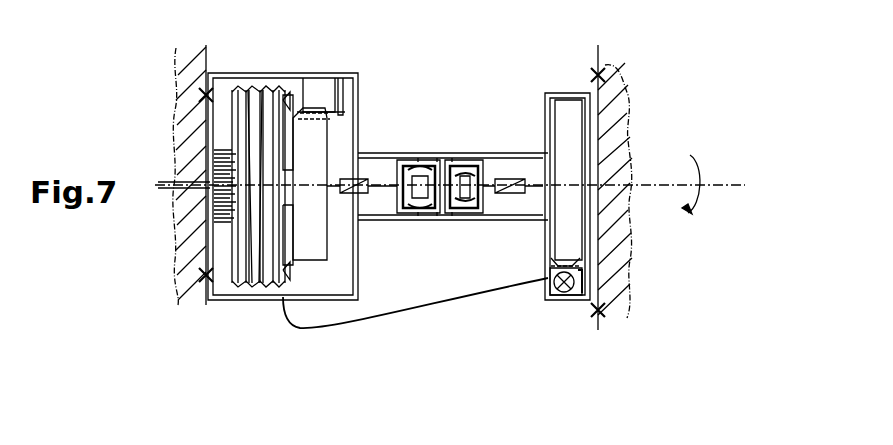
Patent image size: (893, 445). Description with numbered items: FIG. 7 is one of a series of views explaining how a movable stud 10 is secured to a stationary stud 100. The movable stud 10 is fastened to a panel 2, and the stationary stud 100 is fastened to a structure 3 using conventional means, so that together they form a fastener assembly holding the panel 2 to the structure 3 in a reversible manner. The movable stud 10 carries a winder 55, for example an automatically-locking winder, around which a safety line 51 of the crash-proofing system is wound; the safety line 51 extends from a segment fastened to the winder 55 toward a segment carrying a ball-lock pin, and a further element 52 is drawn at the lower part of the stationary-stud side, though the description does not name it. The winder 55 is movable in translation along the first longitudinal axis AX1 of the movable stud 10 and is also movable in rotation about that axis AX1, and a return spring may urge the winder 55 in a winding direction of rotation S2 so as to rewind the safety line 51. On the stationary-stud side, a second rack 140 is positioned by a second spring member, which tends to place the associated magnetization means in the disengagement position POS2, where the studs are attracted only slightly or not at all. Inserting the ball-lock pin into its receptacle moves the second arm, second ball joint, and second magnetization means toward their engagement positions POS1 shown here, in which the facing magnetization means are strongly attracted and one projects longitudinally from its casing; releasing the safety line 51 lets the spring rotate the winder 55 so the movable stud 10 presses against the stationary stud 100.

The panel 2 is at (177, 245).
The structure 3 is at (615, 105).
The movable stud 10 is at (234, 310).
The safety line 51 is at (345, 322).
The sensor 52 is at (570, 305).
The winder 55 is at (264, 88).
The stationary stud 100 is at (490, 105).
The second rack 140 is at (548, 305).
The engagement position POS1 is at (466, 222).
The disengagement position POS2 is at (419, 222).
The winding direction of rotation S2 is at (673, 187).
The first longitudinal axis AX1 is at (738, 188).